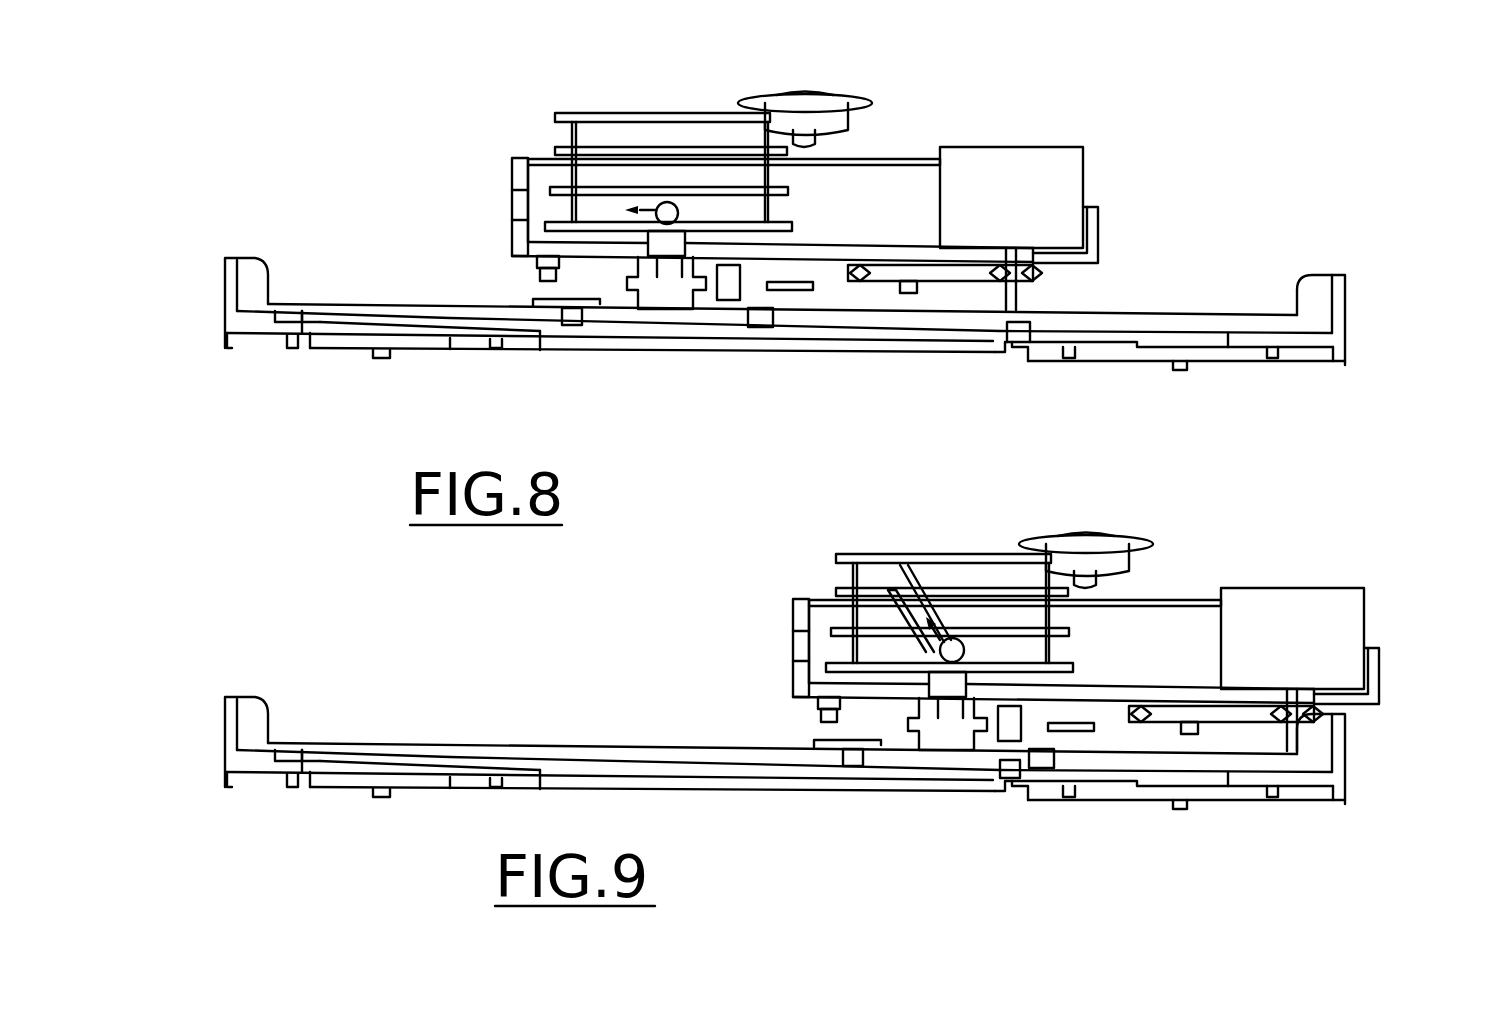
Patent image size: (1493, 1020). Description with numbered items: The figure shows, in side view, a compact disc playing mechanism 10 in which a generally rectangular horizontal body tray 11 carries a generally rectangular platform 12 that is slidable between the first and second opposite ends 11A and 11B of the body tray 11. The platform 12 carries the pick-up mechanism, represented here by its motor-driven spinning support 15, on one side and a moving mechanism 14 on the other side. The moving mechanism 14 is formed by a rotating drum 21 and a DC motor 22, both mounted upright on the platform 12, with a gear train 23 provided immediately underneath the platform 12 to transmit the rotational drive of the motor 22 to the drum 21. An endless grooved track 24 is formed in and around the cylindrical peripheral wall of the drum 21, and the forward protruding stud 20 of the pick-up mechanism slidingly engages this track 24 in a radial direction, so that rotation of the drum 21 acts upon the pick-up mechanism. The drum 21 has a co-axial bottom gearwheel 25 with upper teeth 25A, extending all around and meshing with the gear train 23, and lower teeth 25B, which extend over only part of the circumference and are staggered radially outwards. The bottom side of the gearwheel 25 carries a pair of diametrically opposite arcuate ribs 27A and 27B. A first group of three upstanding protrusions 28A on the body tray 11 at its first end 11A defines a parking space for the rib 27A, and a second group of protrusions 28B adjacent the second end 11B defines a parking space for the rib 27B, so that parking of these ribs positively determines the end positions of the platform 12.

In FIG. 8, the compact disc playing mechanism 10 is at (1262, 97).
In FIG. 9, the compact disc playing mechanism 10 is at (1320, 525).
In FIG. 8, the body tray 11 is at (1195, 309).
In FIG. 9, the body tray 11 is at (553, 745).
In FIG. 8, the first end of body tray 11A is at (232, 297).
In FIG. 9, the first end of body tray 11A is at (232, 742).
In FIG. 8, the second end of body tray 11B is at (1345, 311).
In FIG. 9, the second end of body tray 11B is at (1345, 750).
In FIG. 8, the platform 12 is at (1105, 222).
In FIG. 9, the platform 12 is at (1400, 661).
In FIG. 8, the moving mechanism 14 is at (925, 130).
In FIG. 9, the moving mechanism 14 is at (1205, 545).
In FIG. 8, the spinning support 15 is at (853, 104).
In FIG. 9, the spinning support 15 is at (1135, 545).
In FIG. 8, the stud 20 is at (667, 203).
In FIG. 9, the stud 20 is at (960, 642).
In FIG. 8, the rotating drum 21 is at (566, 112).
In FIG. 9, the rotating drum 21 is at (848, 553).
In FIG. 8, the DC motor 22 is at (1078, 172).
In FIG. 9, the DC motor 22 is at (1360, 605).
In FIG. 8, the gear train 23 is at (892, 305).
In FIG. 9, the gear train 23 is at (1175, 752).
In FIG. 8, the endless grooved track 24 is at (605, 207).
In FIG. 9, the endless grooved track 24 is at (928, 605).
In FIG. 8, the bottom gearwheel 25 is at (707, 305).
In FIG. 9, the bottom gearwheel 25 is at (988, 748).
In FIG. 8, the upper teeth 25A is at (544, 292).
In FIG. 9, the upper teeth 25A is at (824, 738).
In FIG. 8, the lower teeth 25B is at (533, 303).
In FIG. 9, the lower teeth 25B is at (814, 744).
In FIG. 8, the arcuate rib 27A is at (757, 320).
In FIG. 9, the arcuate rib 27A is at (852, 760).
In FIG. 8, the arcuate rib 27B is at (571, 320).
In FIG. 9, the arcuate rib 27B is at (1065, 760).
In FIG. 8, the upstanding protrusions 28A is at (257, 318).
In FIG. 9, the upstanding protrusions 28A is at (262, 757).
In FIG. 8, the upstanding protrusions 28B is at (1032, 316).
In FIG. 9, the upstanding protrusions 28B is at (1015, 758).